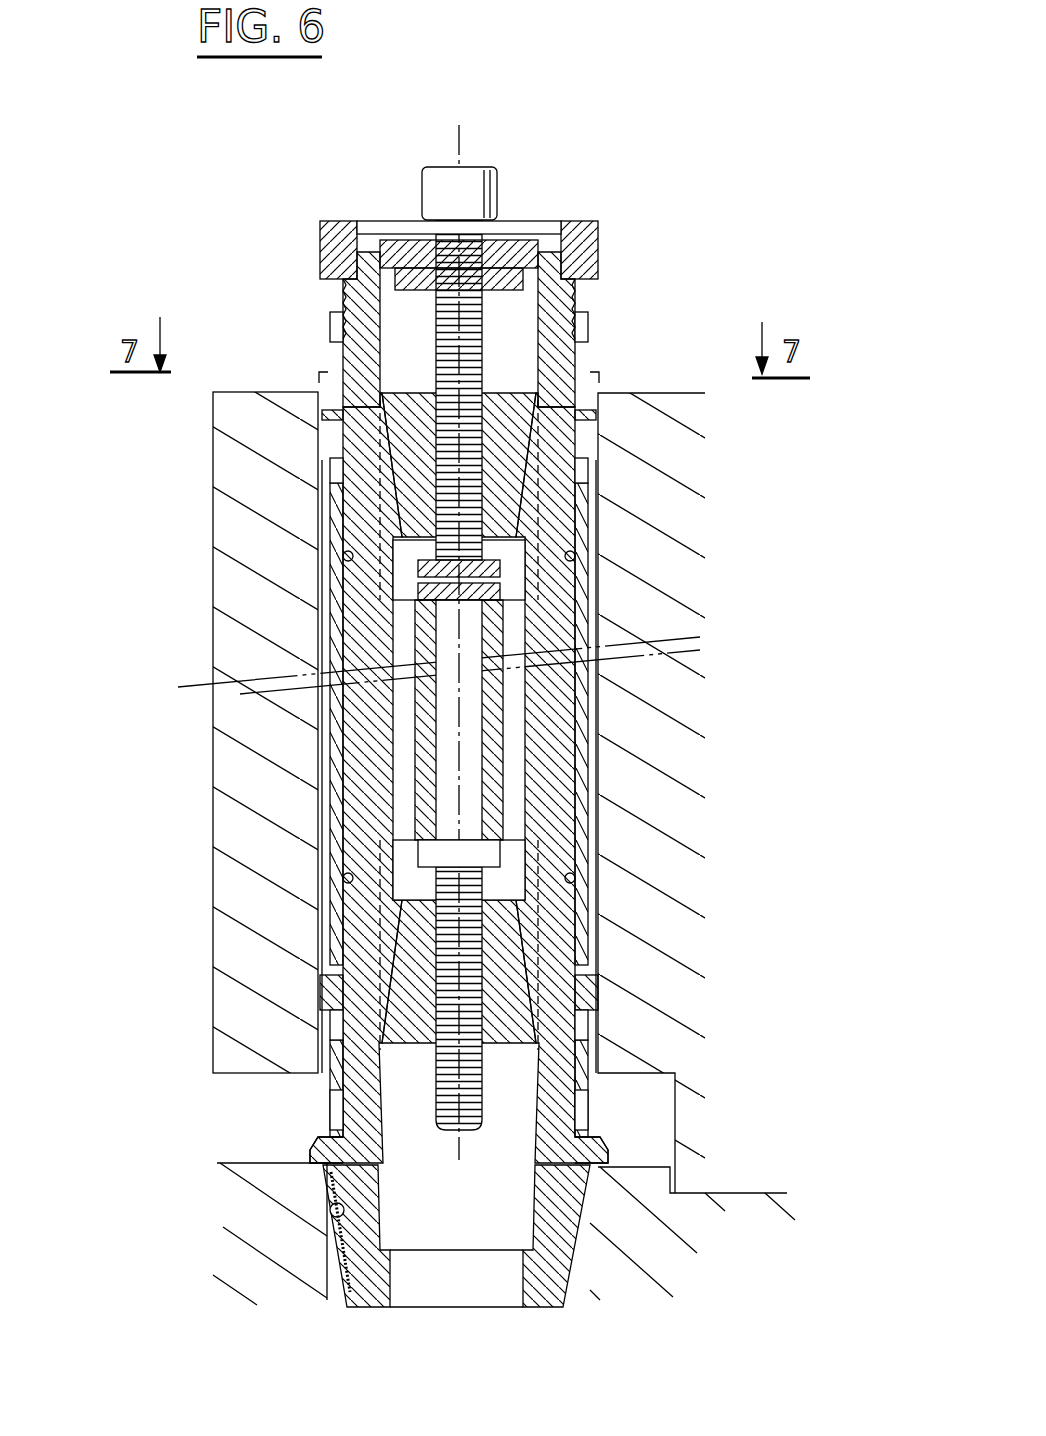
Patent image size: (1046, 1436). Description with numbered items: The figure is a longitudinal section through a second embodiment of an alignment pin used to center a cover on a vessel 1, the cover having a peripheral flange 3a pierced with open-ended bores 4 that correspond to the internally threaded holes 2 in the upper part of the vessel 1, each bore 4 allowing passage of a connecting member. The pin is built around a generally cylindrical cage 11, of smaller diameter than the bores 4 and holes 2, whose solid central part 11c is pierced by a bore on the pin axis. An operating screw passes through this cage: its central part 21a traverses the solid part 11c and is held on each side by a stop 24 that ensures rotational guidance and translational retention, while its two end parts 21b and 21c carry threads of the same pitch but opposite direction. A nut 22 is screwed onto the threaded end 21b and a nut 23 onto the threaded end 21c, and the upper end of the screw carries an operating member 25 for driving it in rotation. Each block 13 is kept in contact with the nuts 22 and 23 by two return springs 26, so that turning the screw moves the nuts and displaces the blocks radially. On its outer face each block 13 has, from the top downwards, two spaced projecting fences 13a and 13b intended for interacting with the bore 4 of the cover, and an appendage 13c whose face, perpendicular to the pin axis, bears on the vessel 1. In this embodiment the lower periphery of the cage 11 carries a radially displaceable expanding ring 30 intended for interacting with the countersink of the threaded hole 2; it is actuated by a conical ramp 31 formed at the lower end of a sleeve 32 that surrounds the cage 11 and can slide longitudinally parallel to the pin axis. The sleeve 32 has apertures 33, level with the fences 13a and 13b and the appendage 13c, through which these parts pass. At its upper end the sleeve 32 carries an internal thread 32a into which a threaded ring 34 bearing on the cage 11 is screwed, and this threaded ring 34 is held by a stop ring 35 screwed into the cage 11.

The vessel 1 is at (655, 1212).
The internally threaded holes 2 is at (583, 1265).
The peripheral flange 3a is at (220, 768).
The open-ended bores 4 is at (325, 613).
The cage 11 is at (360, 364).
The solid central part 11c is at (500, 745).
The block 13 is at (360, 720).
The projecting fence 13a is at (322, 440).
The projecting fence 13b is at (320, 985).
The appendage 13c is at (318, 1140).
The central part 21a is at (470, 635).
The threaded end 21b is at (488, 232).
The threaded end 21c is at (470, 1120).
The nut 22 is at (505, 514).
The nut 23 is at (505, 1000).
The stop 24 is at (500, 576).
The operating member 25 is at (497, 168).
The return springs 26 is at (343, 556).
The expanding ring 30 is at (330, 1210).
The conical ramp 31 is at (328, 1240).
The sleeve 32 is at (322, 817).
The internal thread 32a is at (322, 316).
The apertures 33 is at (333, 470).
The threaded ring 34 is at (335, 219).
The stop ring 35 is at (400, 270).